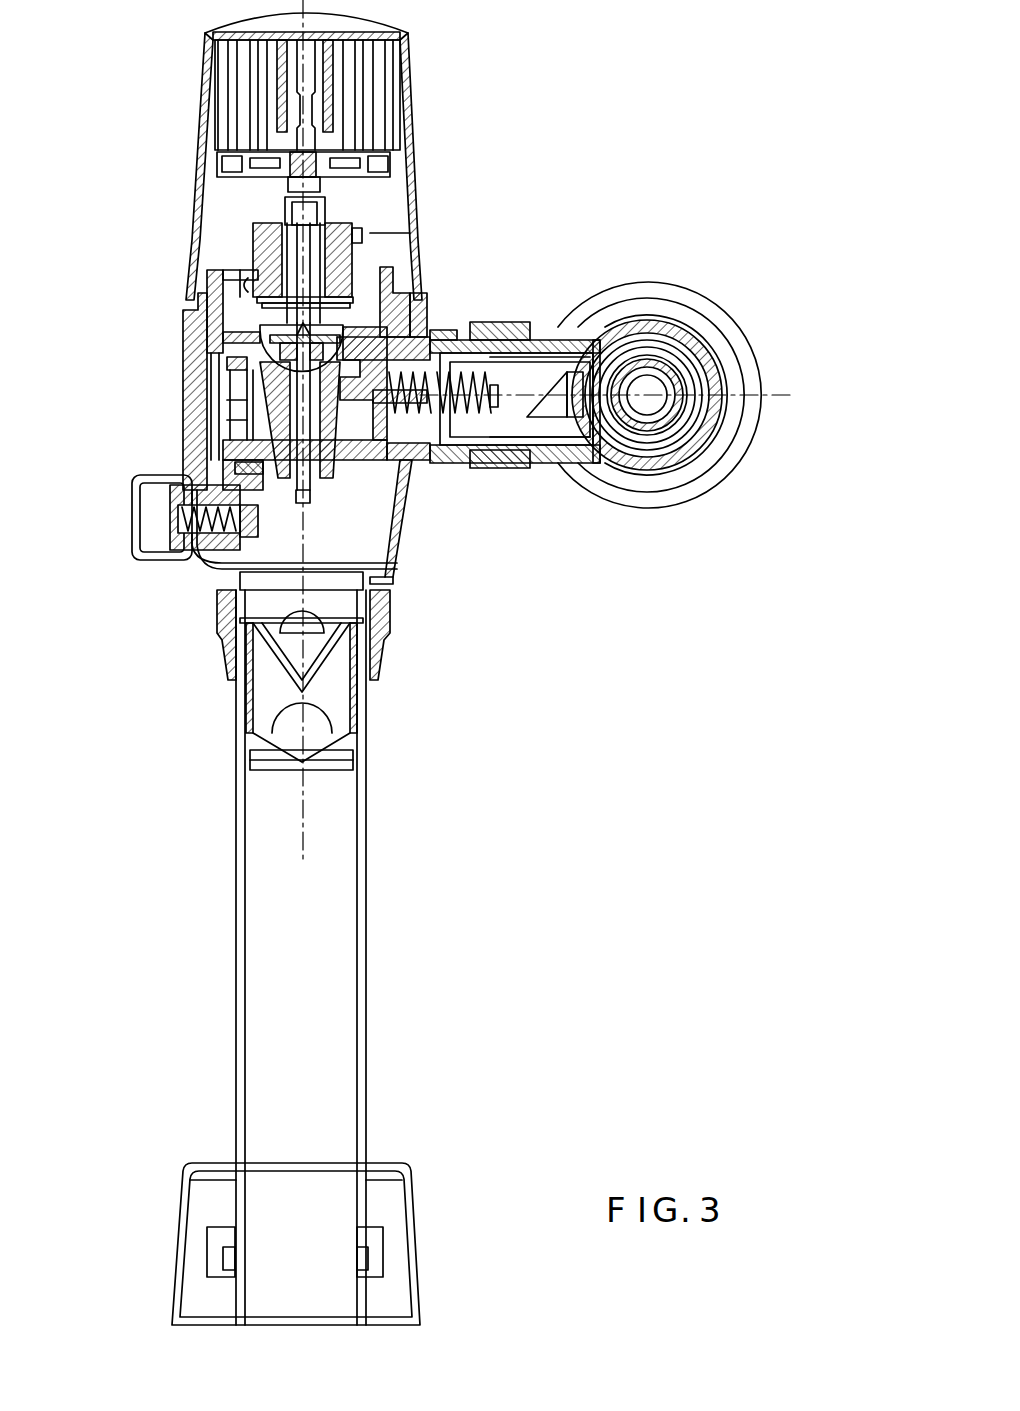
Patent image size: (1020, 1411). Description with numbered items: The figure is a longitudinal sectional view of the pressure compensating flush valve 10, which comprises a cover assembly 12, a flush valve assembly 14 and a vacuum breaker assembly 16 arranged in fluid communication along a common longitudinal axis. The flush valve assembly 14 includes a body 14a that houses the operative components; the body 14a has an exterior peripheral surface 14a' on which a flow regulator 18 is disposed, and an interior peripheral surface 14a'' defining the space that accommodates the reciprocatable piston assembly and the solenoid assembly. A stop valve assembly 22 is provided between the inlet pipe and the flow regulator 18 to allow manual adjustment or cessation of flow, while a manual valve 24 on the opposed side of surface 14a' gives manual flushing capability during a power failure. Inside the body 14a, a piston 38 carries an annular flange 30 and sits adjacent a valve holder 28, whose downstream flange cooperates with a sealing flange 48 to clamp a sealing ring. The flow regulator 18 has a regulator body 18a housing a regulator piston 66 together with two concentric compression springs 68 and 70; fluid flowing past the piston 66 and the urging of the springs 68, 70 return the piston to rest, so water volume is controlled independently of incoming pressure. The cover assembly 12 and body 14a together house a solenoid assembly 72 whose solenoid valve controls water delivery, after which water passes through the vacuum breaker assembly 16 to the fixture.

The flush valve 10 is at (596, 94).
The cover assembly 12 is at (418, 177).
The flush valve assembly 14 is at (183, 367).
The body 14a is at (266, 559).
The exterior peripheral surface 14a' is at (438, 518).
The interior peripheral surface 14a'' is at (430, 588).
The vacuum breaker assembly 16 is at (363, 845).
The flow regulator 18 is at (462, 342).
The regulator body 18a is at (617, 323).
The stop valve assembly 22 is at (712, 432).
The manual valve 24 is at (133, 520).
The valve holder 28 is at (257, 420).
The annular flange 30 is at (227, 340).
The piston 38 is at (257, 457).
The sealing flange 48 is at (333, 462).
The regulator piston 66 is at (531, 390).
The compression spring 68 is at (486, 350).
The compression spring 70 is at (513, 357).
The solenoid assembly 72 is at (250, 250).